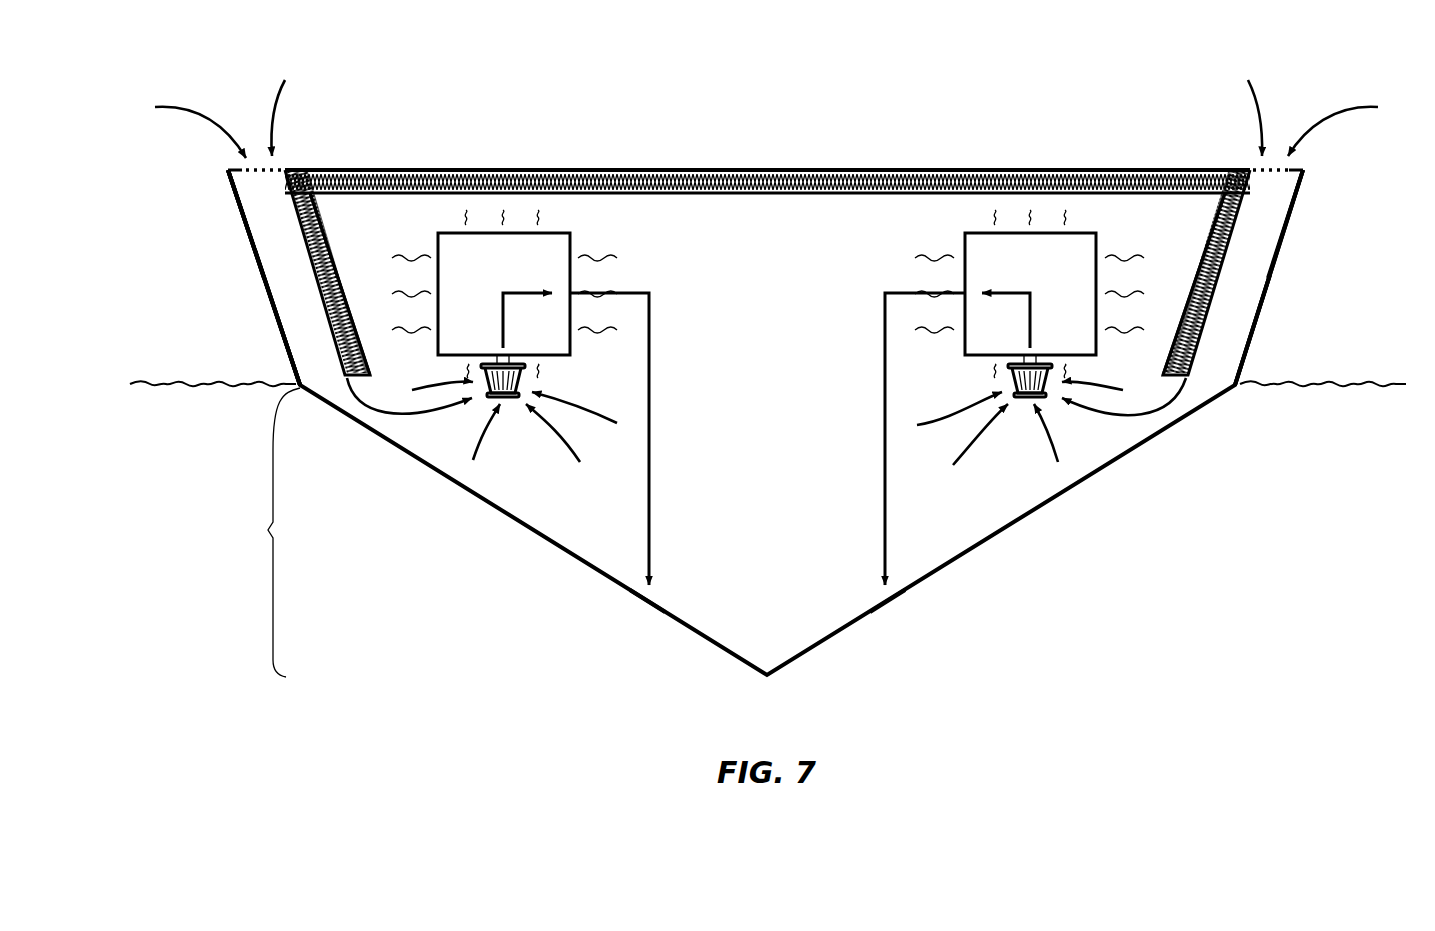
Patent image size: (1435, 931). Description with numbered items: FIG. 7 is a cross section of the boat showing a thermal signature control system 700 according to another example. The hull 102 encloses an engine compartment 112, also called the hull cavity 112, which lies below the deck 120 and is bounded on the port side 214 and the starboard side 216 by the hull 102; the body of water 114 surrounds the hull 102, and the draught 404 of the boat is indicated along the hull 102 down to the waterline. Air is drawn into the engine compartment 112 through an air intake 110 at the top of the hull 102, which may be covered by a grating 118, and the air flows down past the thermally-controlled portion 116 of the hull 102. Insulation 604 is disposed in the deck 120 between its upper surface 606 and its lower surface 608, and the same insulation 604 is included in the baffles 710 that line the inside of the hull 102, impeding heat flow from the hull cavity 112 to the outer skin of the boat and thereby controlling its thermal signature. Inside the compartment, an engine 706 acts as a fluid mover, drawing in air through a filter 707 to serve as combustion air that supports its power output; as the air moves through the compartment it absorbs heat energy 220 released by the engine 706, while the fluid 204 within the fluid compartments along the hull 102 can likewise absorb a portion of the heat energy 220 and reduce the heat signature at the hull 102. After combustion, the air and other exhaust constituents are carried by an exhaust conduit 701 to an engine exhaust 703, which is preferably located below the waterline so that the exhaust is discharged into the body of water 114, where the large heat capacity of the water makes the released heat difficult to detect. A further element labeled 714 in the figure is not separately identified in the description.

The hull 102 is at (1005, 528).
The air intake 110 is at (242, 116).
The engine compartment 112 is at (783, 493).
The body of water 114 is at (1216, 589).
The thermally-controlled portion 116 is at (236, 192).
The grating 118 is at (247, 168).
The deck 120 is at (430, 171).
The fluid 204 is at (302, 358).
The port side 214 is at (279, 325).
The starboard side 216 is at (1241, 370).
The heat energy 220 is at (370, 236).
The draught 404 is at (265, 532).
The insulation 604 is at (300, 255).
The upper surface 606 is at (1010, 172).
The lower surface 608 is at (1100, 187).
The thermal signature control system 700 is at (938, 98).
The exhaust conduit 701 is at (652, 401).
The engine exhaust 703 is at (636, 612).
The engine 706 is at (521, 278).
The filter 707 is at (532, 385).
The baffles 710 is at (321, 297).
The air passage 714 is at (262, 231).